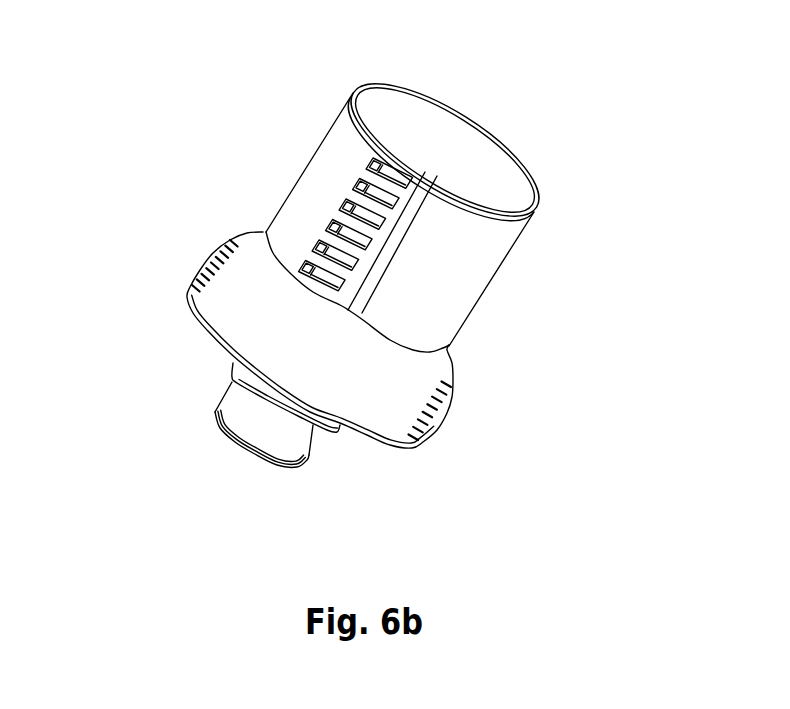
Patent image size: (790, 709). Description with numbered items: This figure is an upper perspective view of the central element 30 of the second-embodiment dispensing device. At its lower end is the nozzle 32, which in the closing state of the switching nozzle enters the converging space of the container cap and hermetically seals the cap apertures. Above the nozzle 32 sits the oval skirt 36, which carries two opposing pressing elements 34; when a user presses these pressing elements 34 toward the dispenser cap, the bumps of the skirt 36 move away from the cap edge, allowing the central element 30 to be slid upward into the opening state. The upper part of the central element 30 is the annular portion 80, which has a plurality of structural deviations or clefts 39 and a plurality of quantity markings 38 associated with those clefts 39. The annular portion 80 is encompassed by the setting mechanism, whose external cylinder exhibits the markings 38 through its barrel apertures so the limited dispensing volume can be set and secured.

The central element 30 is at (205, 93).
The nozzle 32 is at (313, 452).
The pressing elements 34 is at (227, 343).
The oval skirt 36 is at (425, 388).
The quantity markings 38 is at (447, 175).
The clefts 39 is at (347, 227).
The annular portion 80 is at (477, 192).